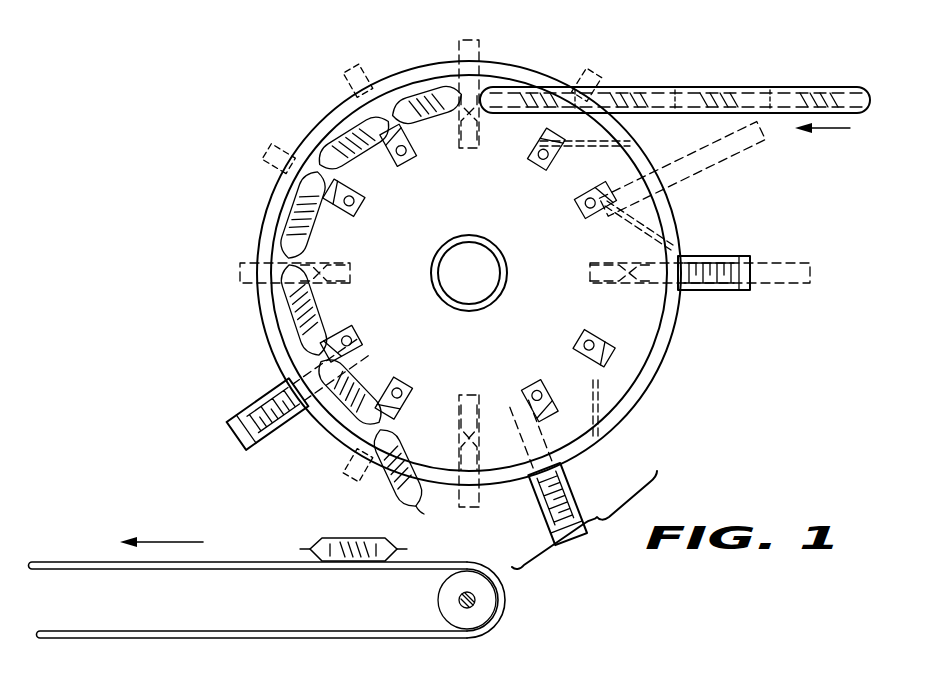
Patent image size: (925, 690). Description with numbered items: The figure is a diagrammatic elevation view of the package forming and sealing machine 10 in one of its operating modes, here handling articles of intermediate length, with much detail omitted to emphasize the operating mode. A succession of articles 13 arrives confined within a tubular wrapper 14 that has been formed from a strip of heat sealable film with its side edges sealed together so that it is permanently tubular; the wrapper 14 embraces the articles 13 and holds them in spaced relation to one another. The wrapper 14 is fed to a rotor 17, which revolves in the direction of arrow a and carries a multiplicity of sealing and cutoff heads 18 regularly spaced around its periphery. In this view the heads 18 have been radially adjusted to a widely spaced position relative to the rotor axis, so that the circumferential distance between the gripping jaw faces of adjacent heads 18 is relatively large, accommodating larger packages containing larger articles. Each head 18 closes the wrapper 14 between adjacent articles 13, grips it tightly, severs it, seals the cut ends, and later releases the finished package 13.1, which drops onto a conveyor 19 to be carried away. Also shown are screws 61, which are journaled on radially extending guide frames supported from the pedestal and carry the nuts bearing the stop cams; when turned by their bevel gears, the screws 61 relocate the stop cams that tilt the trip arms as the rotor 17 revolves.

The package forming and sealing machine 10 is at (250, 178).
The articles 13 is at (714, 86).
The package 13.1 is at (342, 536).
The tubular wrapper 14 is at (846, 86).
The rotor 17 is at (688, 340).
The sealing and cutoff heads 18 is at (410, 168).
The conveyor 19 is at (222, 568).
The screws 61 is at (714, 270).
The arrow a is at (266, 114).